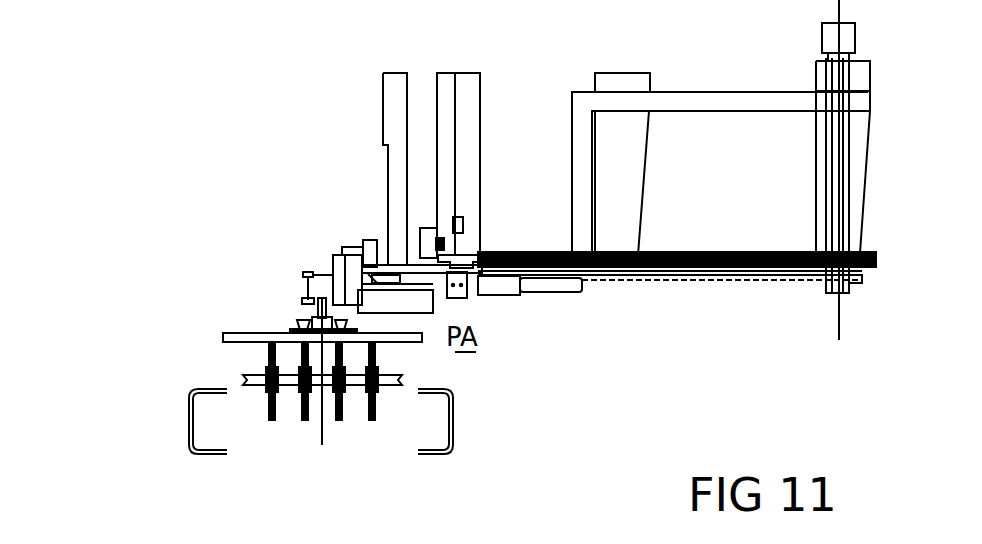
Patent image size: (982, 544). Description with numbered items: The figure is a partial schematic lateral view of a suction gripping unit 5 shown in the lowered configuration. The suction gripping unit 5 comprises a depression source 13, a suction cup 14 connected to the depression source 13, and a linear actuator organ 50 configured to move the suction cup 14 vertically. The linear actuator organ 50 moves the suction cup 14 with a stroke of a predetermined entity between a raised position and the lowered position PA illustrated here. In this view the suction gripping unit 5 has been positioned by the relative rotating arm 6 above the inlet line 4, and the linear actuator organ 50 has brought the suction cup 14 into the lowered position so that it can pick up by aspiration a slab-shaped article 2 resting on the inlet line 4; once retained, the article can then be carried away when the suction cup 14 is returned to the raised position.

The slab-shaped article 2 is at (235, 332).
The inlet line 4 is at (179, 396).
The suction gripping unit 5 is at (324, 247).
The rotating arm 6 is at (538, 252).
The depression source 13 is at (397, 305).
The suction cup 14 is at (297, 328).
The linear actuator organ 50 is at (305, 300).